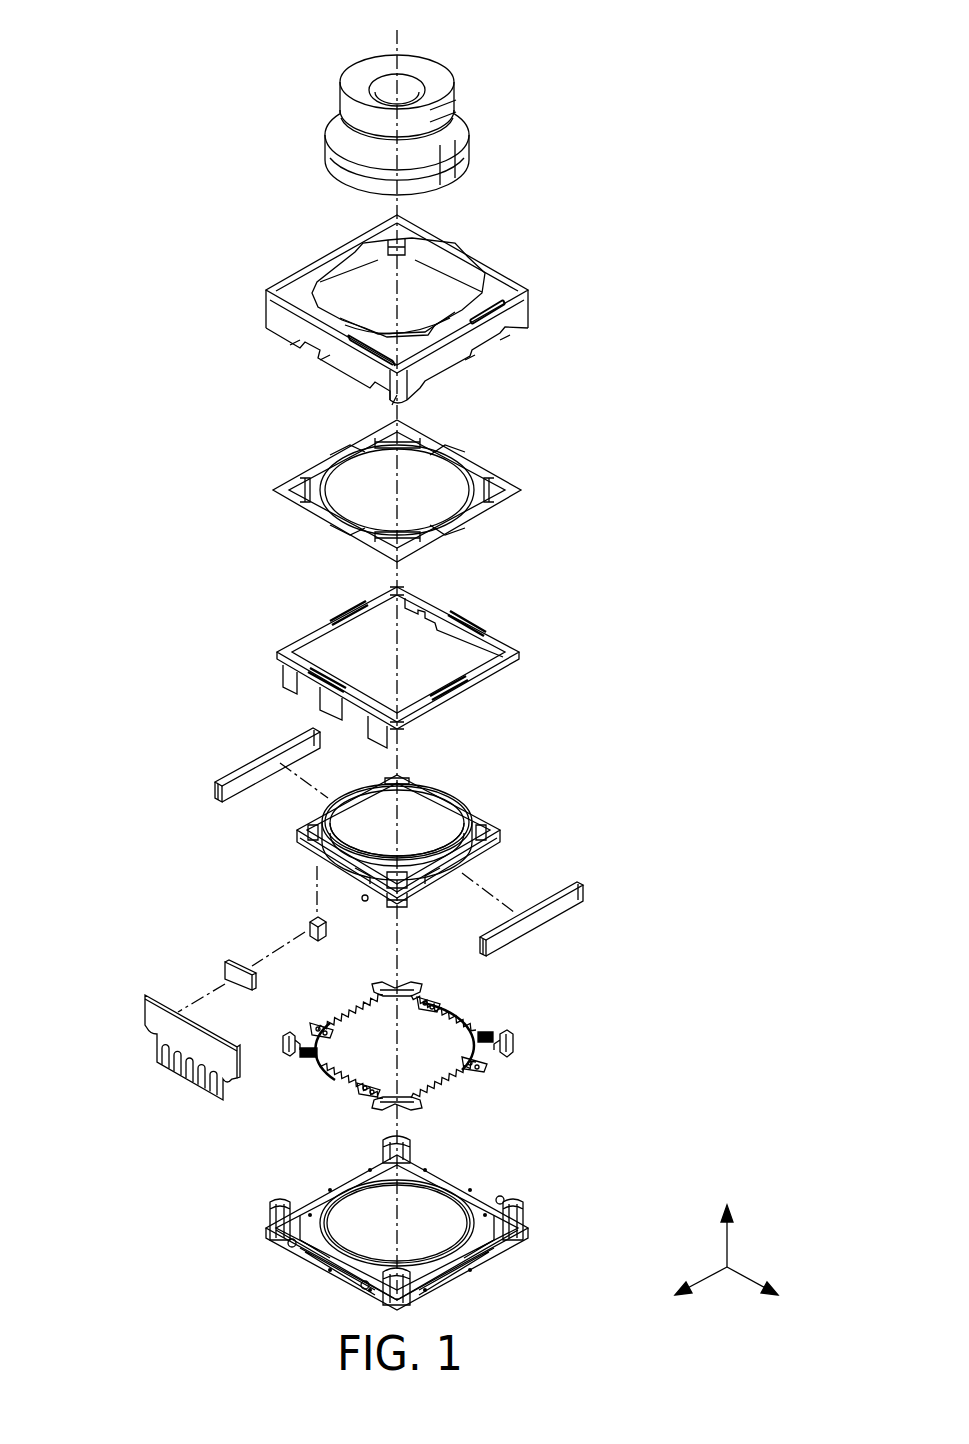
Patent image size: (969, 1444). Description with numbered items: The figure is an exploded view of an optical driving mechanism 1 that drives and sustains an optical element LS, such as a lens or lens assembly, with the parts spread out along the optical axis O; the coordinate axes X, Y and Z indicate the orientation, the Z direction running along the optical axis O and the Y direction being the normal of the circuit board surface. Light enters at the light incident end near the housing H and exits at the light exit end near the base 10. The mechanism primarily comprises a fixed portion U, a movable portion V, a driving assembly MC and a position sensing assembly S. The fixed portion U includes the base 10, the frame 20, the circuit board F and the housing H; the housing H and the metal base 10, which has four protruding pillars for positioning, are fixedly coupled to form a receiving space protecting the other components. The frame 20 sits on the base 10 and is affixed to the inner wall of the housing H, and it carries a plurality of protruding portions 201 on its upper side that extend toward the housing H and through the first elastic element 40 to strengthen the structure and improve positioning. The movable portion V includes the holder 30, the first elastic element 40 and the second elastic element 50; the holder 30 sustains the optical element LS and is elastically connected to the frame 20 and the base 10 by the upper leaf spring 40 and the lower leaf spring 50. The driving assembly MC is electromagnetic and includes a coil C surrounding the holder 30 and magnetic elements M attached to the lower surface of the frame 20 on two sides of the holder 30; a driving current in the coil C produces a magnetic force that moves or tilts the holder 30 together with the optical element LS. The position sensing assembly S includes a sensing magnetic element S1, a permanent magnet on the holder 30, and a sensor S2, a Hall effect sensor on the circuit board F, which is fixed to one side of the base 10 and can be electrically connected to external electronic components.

The optical driving mechanism 1 is at (42, 27).
The optical axis O is at (396, 650).
The optical element LS is at (440, 77).
The housing H is at (521, 290).
The first elastic element 40 is at (512, 490).
The protruding portions 201 is at (352, 612).
The frame 20 is at (512, 652).
The magnetic elements M is at (234, 772).
The holder 30 is at (478, 811).
The coil C is at (300, 858).
The sensing magnetic element S1 is at (311, 917).
The sensor S2 is at (228, 963).
The circuit board F is at (148, 1012).
The second elastic element 50 is at (502, 1030).
The base 10 is at (482, 1200).
The driving assembly MC is at (748, 553).
The fixed portion U is at (748, 630).
The movable portion V is at (748, 740).
The position sensing assembly S is at (748, 848).
The X-axis X is at (763, 1297).
The Y-axis Y is at (687, 1297).
The Z-axis Z is at (726, 1222).